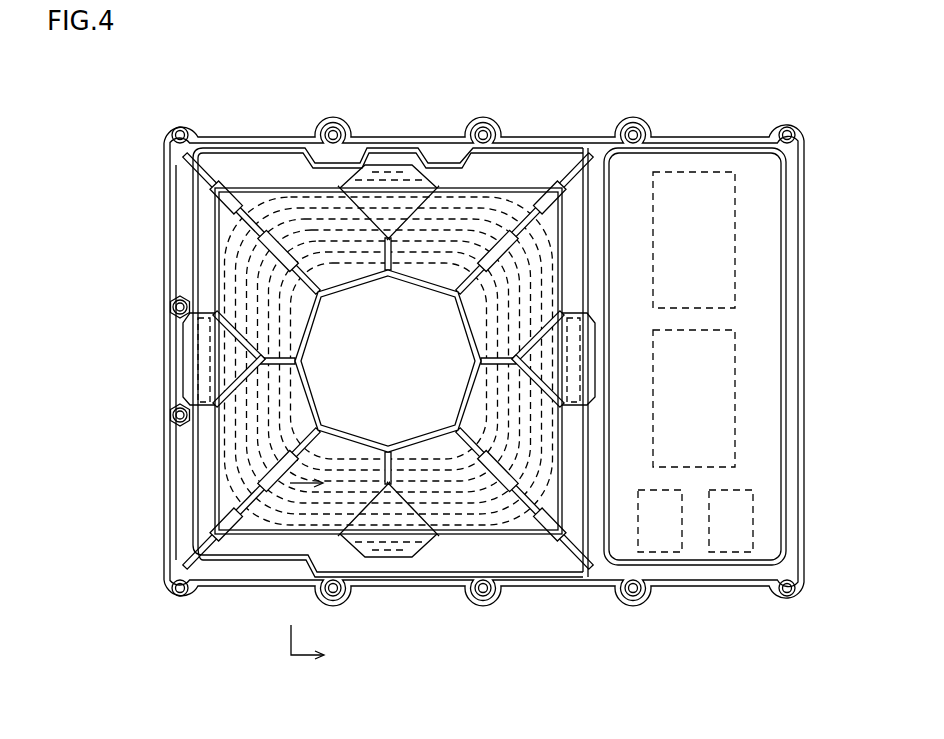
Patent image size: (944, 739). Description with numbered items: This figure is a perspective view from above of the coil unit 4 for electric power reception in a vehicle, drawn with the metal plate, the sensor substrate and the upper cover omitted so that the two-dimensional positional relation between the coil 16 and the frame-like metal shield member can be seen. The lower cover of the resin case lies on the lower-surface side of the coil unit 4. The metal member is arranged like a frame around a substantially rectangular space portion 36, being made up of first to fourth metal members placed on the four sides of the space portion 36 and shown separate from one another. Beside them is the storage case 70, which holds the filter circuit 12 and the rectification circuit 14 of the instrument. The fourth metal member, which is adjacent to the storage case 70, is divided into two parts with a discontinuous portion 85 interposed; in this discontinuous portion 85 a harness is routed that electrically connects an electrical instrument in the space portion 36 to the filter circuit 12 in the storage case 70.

The coil unit 4 is at (490, 85).
The filter circuit 12 is at (740, 230).
The rectification circuit 14 is at (740, 395).
The coil 16 is at (236, 468).
The space portion 36 is at (378, 396).
The storage case 70 is at (690, 158).
The discontinuous portion 85 is at (573, 362).